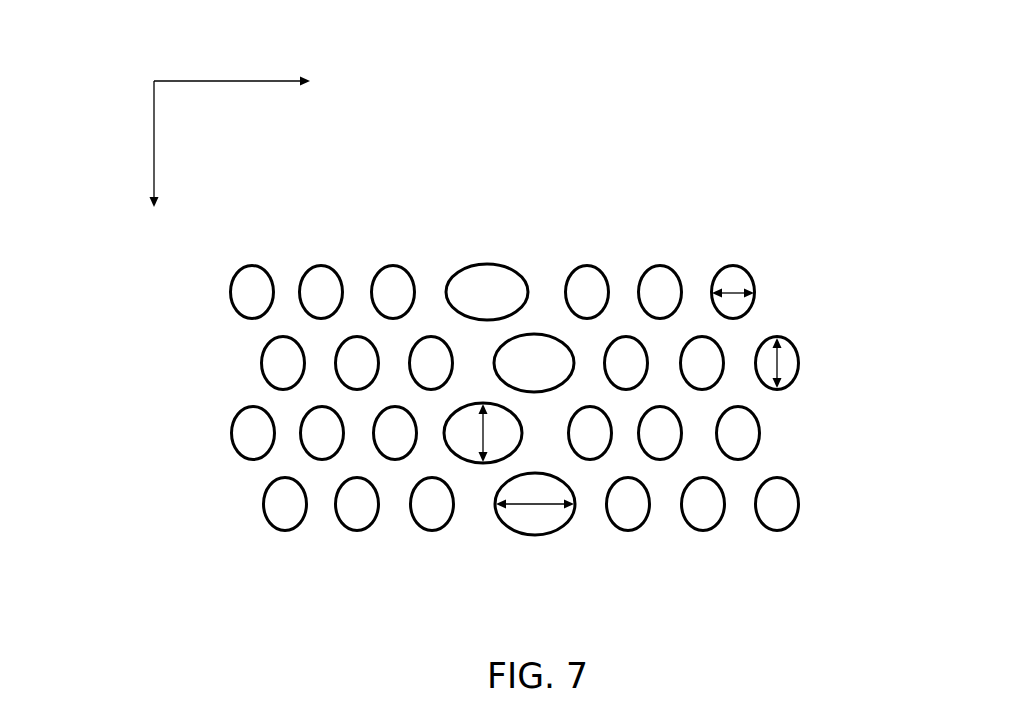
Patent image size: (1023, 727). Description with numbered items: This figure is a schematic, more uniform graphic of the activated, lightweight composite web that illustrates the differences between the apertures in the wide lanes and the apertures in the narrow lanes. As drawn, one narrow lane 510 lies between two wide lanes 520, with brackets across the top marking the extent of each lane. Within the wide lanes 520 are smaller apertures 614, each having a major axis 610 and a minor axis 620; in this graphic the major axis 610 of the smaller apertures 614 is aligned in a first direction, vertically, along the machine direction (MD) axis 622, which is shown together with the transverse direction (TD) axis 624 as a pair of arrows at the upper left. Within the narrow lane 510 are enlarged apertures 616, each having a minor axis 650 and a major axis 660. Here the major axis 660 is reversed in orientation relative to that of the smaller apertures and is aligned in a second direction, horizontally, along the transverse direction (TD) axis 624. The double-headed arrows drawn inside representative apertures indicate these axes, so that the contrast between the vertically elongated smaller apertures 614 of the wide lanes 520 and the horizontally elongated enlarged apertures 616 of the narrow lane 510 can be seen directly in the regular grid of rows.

The narrow lane 510 is at (576, 247).
The wide lane 520 is at (440, 247).
The major axis 610 is at (779, 363).
The smaller aperture 614 is at (797, 378).
The enlarged aperture 616 is at (563, 530).
The minor axis 620 is at (757, 295).
The machine direction (MD) axis 622 is at (96, 144).
The transverse direction (TD) axis 624 is at (232, 57).
The minor axis 650 is at (483, 437).
The major axis 660 is at (535, 504).